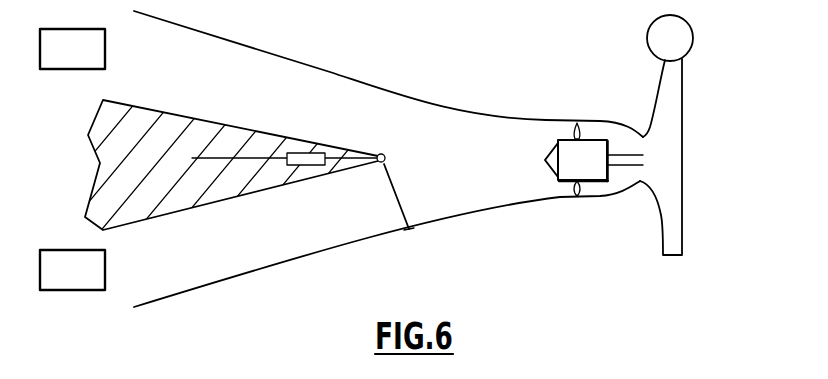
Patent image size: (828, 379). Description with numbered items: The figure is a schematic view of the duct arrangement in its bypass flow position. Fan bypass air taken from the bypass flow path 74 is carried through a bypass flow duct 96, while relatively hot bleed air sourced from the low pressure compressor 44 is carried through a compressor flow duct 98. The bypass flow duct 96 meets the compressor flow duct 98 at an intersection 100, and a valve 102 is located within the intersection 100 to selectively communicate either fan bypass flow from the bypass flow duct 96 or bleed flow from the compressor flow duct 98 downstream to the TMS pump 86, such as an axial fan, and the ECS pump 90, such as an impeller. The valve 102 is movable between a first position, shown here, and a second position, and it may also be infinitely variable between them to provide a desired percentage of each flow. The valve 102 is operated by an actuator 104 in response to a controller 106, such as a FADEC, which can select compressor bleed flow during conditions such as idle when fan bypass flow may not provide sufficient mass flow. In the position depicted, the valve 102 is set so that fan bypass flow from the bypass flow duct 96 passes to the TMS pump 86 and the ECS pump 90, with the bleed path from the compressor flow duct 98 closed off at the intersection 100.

The bypass flow path 74 is at (56, 62).
The low pressure compressor 44 is at (56, 283).
The bypass flow duct 96 is at (187, 65).
The compressor flow duct 98 is at (185, 253).
The intersection 100 is at (425, 231).
The valve 102 is at (397, 197).
The actuator 104 is at (307, 153).
The controller 106 is at (192, 141).
The TMS pump 86 is at (566, 173).
The ECS pump 90 is at (678, 171).